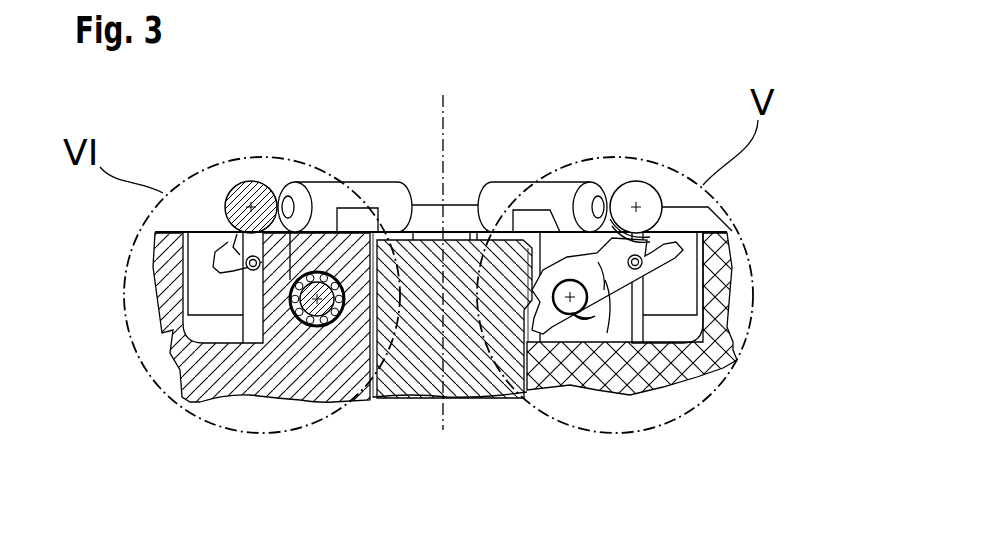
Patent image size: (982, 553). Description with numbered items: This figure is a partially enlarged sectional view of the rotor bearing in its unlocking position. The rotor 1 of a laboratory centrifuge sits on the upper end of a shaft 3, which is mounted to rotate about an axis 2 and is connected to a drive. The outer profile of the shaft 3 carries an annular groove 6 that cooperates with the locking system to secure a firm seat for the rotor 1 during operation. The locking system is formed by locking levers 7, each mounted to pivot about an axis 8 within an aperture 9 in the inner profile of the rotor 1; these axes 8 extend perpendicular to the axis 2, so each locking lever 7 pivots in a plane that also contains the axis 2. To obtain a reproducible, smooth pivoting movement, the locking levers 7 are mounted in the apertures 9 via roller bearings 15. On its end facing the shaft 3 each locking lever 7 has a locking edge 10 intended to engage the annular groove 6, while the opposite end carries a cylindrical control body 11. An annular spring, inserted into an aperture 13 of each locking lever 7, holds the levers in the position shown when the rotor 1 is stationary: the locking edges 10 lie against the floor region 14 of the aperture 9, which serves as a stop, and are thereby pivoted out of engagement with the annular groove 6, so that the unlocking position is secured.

The rotor 1 is at (177, 347).
The axis 2 is at (443, 418).
The shaft 3 is at (413, 370).
The annular groove 6 is at (392, 355).
The locking lever 7 is at (605, 305).
The axis 8 is at (570, 300).
The aperture 9 is at (680, 299).
The locking edge 10 is at (558, 315).
The cylindrical control body 11 is at (258, 187).
The aperture 13 is at (650, 257).
The floor region 14 is at (612, 300).
The roller bearing 15 is at (303, 326).